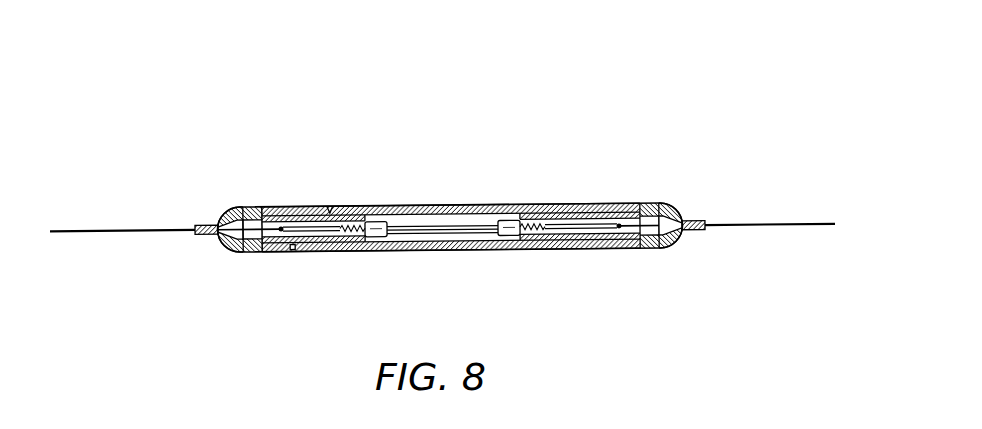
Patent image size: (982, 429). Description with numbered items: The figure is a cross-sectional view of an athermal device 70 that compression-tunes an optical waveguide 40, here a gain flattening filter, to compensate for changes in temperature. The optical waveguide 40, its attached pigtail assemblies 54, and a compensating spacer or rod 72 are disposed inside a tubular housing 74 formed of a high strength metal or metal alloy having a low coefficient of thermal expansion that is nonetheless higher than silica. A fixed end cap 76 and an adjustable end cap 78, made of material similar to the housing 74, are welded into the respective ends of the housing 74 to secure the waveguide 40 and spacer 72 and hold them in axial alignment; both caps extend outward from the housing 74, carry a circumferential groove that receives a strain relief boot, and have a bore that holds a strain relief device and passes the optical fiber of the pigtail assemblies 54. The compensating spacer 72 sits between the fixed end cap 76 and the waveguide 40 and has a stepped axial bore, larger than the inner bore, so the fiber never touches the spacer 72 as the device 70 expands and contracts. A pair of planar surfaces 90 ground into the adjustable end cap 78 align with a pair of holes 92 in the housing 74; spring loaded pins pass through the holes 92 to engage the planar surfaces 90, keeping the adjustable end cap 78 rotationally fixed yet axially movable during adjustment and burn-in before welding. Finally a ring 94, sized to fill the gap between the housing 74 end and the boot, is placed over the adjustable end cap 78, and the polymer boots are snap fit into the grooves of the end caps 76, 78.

The athermal device 70 is at (593, 189).
The compensating spacer 72 is at (535, 204).
The tubular housing 74 is at (379, 204).
The fixed end cap 76 is at (639, 203).
The adjustable end cap 78 is at (301, 206).
The planar surfaces 90 is at (310, 252).
The holes 92 is at (289, 253).
The ring 94 is at (263, 205).
The optical waveguide 40 is at (437, 219).
The pigtail assemblies 54 is at (573, 250).